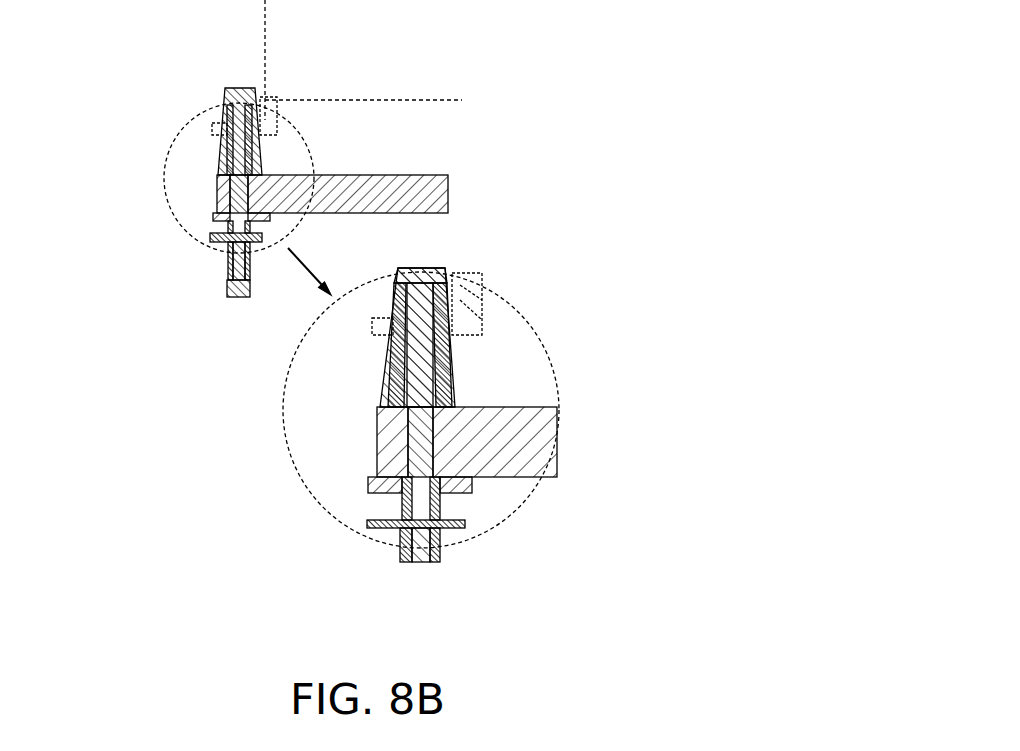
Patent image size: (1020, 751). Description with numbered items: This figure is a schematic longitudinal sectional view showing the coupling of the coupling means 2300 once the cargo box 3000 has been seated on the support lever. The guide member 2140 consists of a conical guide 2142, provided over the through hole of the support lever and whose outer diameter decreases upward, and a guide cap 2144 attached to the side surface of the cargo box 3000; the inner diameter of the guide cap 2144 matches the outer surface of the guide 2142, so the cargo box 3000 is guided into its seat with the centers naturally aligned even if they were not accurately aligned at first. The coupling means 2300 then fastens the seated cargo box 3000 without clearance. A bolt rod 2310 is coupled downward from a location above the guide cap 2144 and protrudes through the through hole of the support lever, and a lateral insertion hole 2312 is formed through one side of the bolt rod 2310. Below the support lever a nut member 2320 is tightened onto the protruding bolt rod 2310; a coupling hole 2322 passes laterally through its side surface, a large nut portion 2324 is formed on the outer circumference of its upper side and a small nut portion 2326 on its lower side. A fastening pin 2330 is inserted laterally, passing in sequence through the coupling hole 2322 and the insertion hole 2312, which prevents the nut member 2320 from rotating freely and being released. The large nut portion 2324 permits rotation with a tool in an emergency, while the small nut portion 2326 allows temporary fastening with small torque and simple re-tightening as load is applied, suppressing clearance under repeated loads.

The cargo box 3000 is at (387, 100).
The guide member 2140 is at (535, 335).
The guide 2142 is at (440, 392).
The guide cap 2144 is at (453, 360).
The coupling means 2300 is at (312, 459).
The bolt rod 2310 is at (418, 366).
The insertion hole 2312 is at (424, 534).
The nut member 2320 is at (398, 507).
The coupling hole 2322 is at (403, 529).
The large nut portion 2324 is at (216, 220).
The small nut portion 2326 is at (224, 286).
The fastening pin 2330 is at (400, 524).